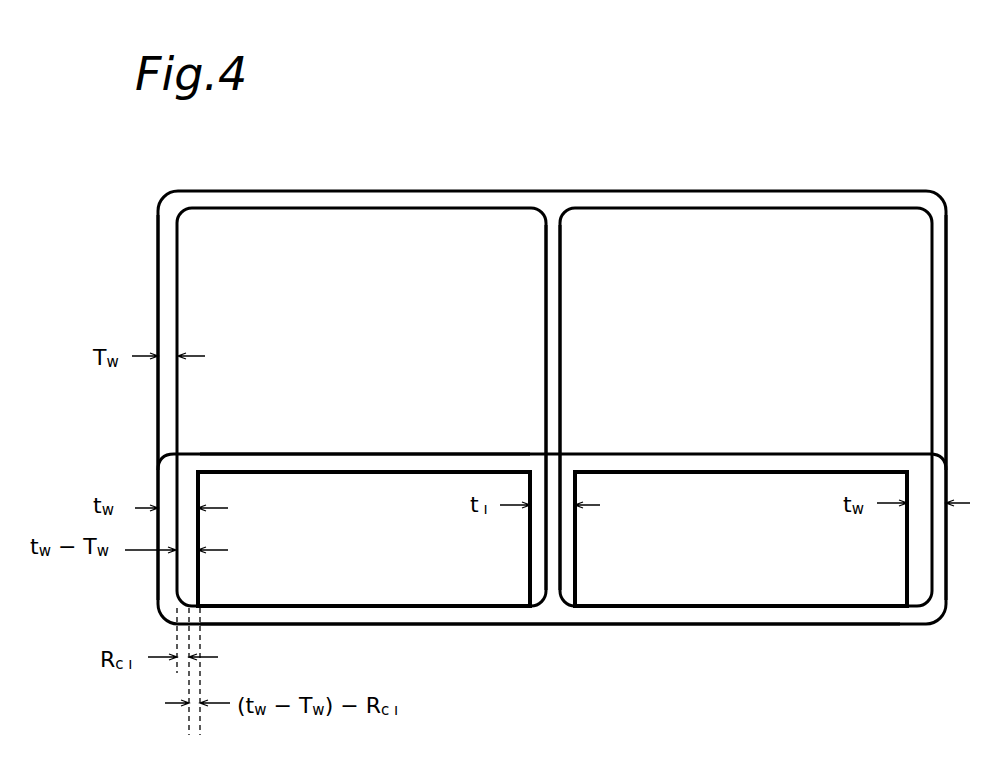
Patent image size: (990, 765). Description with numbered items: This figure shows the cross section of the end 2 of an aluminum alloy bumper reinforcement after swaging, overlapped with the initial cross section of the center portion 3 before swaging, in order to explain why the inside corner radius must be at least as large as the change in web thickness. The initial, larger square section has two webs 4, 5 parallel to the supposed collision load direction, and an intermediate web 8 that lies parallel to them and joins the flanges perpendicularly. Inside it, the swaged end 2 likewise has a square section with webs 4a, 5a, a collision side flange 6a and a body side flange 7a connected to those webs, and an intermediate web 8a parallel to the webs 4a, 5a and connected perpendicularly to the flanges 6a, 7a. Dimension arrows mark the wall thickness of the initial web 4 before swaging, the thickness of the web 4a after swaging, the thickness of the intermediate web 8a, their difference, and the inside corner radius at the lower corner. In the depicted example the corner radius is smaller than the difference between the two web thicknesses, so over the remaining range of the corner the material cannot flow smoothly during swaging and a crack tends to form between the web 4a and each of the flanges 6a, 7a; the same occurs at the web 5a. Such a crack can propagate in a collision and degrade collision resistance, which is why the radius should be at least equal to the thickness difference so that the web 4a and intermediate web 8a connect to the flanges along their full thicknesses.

The center portion 3 is at (688, 176).
The web 4 is at (163, 292).
The web 5 is at (938, 315).
The intermediate web 8 is at (555, 343).
The end 2 is at (694, 437).
The collision side flange 6a is at (366, 457).
The web 4a is at (190, 565).
The intermediate web 8a is at (568, 552).
The web 5a is at (917, 545).
The body side flange 7a is at (662, 618).